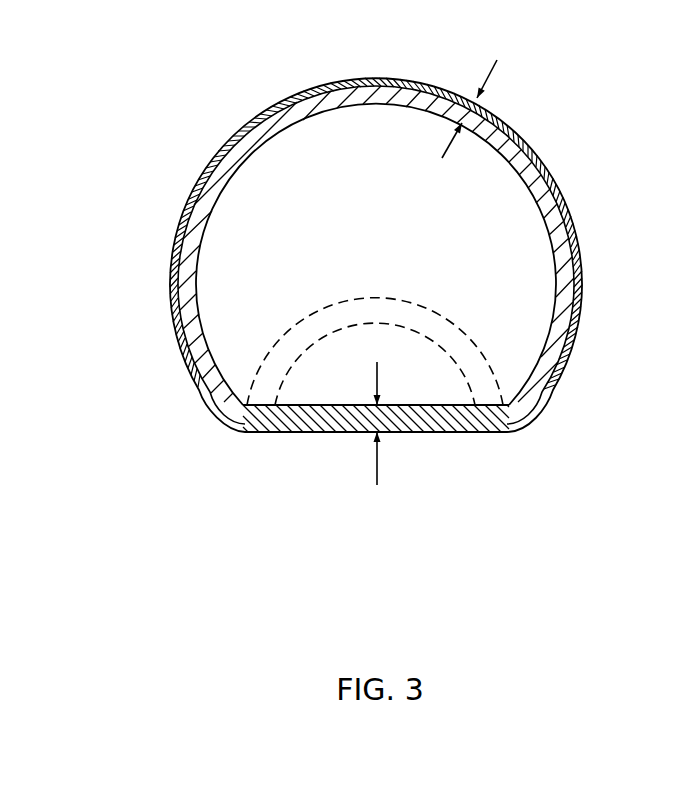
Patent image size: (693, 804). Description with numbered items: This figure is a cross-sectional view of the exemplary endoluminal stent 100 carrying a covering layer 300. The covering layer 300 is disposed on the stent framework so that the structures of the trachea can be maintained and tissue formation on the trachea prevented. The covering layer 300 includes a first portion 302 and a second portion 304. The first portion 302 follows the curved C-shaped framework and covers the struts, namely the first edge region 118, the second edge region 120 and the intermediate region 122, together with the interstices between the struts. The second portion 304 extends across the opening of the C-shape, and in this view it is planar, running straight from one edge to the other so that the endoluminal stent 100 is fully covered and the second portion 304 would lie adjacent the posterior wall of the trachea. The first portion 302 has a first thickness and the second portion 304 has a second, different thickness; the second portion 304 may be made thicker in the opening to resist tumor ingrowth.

The covering layer 300 is at (552, 107).
The endoluminal stent 100 is at (550, 207).
The first edge region 118 is at (188, 277).
The second edge region 120 is at (574, 268).
The intermediate region 122 is at (363, 90).
The first portion 302 is at (577, 336).
The second portion 304 is at (276, 368).